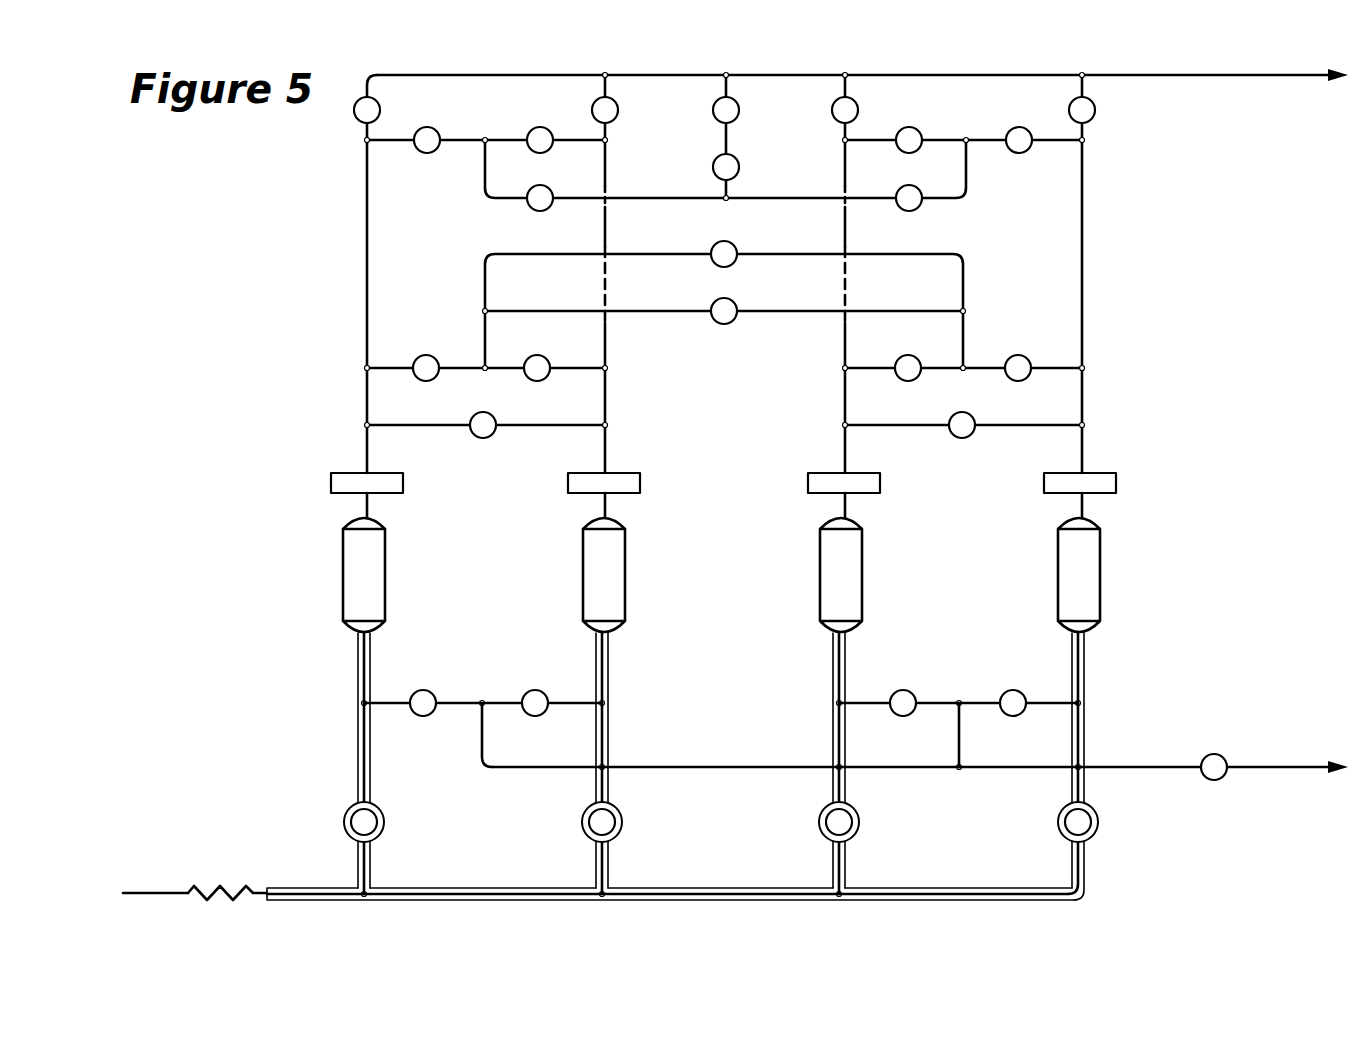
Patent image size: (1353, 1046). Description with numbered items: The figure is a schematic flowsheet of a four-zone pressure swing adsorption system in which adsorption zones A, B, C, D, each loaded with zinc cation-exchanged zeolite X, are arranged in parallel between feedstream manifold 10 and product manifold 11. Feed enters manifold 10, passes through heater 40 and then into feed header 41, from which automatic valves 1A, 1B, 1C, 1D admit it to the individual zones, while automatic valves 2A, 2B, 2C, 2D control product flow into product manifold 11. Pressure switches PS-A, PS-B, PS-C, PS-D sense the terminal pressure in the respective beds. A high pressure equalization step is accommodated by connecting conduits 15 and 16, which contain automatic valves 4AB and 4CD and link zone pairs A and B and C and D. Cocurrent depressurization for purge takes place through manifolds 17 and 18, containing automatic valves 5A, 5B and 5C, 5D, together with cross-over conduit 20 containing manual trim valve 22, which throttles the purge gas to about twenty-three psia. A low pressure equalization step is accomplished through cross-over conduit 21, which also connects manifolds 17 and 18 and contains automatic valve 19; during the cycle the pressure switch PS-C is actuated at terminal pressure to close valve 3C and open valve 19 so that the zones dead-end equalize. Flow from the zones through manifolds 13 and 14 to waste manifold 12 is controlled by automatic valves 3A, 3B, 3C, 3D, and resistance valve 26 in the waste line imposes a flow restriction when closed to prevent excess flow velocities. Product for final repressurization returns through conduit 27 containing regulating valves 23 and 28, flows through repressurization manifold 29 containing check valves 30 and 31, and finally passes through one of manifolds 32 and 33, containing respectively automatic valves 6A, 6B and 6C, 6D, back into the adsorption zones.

The automatic valve 2A is at (380, 100).
The automatic valve 2B is at (617, 102).
The automatic valve 2C is at (857, 102).
The automatic valve 2D is at (1094, 102).
The automatic valve 6A is at (423, 153).
The automatic valve 6B is at (549, 152).
The automatic valve 6C is at (902, 152).
The automatic valve 6D is at (1028, 152).
The manifold 32 is at (455, 140).
The manifold 33 is at (987, 140).
The check valve 30 is at (522, 230).
The check valve 31 is at (915, 188).
The regulating valve 23 is at (716, 120).
The regulating valve 28 is at (738, 160).
The conduit 27 is at (728, 195).
The repressurization manifold 29 is at (702, 198).
The cross-over conduit 21 is at (630, 252).
The automatic valve 19 is at (734, 245).
The manual trim valve 22 is at (734, 302).
The cross-over conduit 20 is at (750, 313).
The automatic valve 5A is at (424, 356).
The automatic valve 5B is at (531, 356).
The automatic valve 5C is at (905, 356).
The automatic valve 5D is at (1011, 356).
The manifold 17 is at (392, 370).
The manifold 18 is at (1068, 372).
The automatic valve 4AB is at (491, 413).
The automatic valve 4CD is at (952, 413).
The connecting conduit 15 is at (560, 427).
The connecting conduit 16 is at (900, 426).
The pressure switch PS-A is at (340, 495).
The pressure switch PS-B is at (580, 495).
The pressure switch PS-C is at (880, 495).
The pressure switch PS-D is at (1116, 495).
The adsorption zone A is at (343, 594).
The adsorption zone B is at (583, 590).
The adsorption zone C is at (862, 600).
The adsorption zone D is at (1100, 597).
The manifold 13 is at (517, 703).
The manifold 14 is at (995, 703).
The automatic valve 3A is at (427, 716).
The automatic valve 3B is at (543, 715).
The automatic valve 3C is at (905, 716).
The automatic valve 3D is at (1022, 716).
The waste manifold 12 is at (677, 767).
The resistance valve 26 is at (1223, 757).
The automatic valve 1A is at (379, 815).
The automatic valve 1B is at (618, 815).
The automatic valve 1C is at (856, 815).
The automatic valve 1D is at (1095, 815).
The feedstream manifold 10 is at (147, 893).
The heater 40 is at (242, 893).
The feed header 41 is at (680, 893).
The product manifold 11 is at (1243, 75).